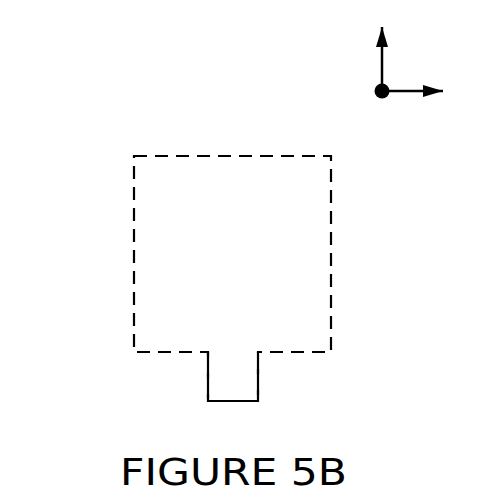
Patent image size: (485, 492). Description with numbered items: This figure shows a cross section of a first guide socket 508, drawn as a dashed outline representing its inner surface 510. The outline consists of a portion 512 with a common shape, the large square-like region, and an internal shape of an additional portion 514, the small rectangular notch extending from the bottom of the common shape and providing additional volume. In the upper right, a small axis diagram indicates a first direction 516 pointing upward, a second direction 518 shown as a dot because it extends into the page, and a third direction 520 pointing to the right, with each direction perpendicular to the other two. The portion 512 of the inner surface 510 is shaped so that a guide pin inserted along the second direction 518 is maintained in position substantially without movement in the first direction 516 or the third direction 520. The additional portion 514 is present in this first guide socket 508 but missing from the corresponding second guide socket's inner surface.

The first guide socket 508 is at (104, 80).
The inner surface 510 is at (218, 157).
The portion with a common shape 512 is at (200, 250).
The additional portion 514 is at (230, 383).
The first direction 516 is at (380, 53).
The second direction 518 is at (376, 95).
The third direction 520 is at (404, 97).